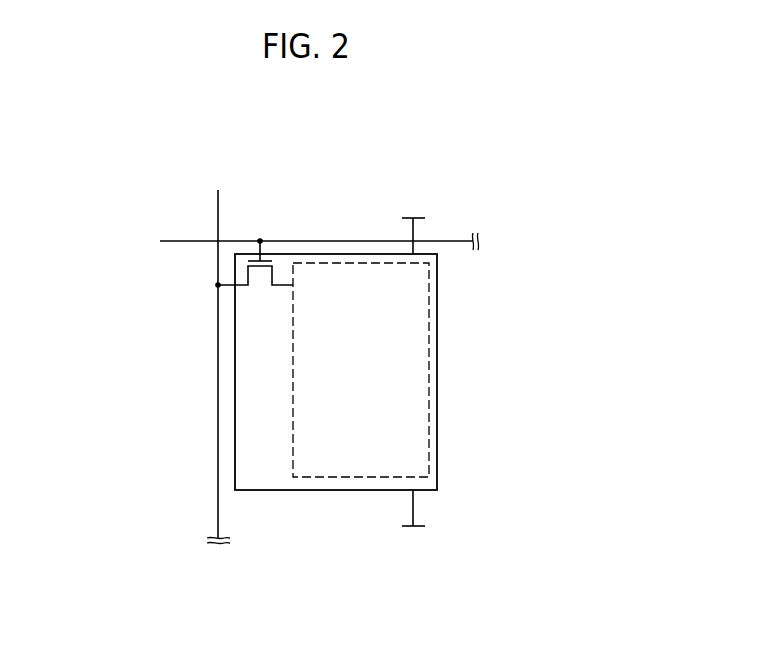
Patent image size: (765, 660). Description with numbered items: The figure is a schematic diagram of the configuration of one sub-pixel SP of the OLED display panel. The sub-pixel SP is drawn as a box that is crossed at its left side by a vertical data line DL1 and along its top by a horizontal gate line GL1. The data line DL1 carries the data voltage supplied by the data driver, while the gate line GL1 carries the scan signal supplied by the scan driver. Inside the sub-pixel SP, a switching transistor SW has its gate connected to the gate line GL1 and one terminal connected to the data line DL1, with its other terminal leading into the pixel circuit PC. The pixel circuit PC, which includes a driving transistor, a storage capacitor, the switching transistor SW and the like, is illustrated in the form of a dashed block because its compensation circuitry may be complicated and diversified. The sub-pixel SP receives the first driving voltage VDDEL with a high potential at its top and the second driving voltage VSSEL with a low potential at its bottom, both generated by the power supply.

The data line DL1 is at (216, 355).
The gate line GL1 is at (303, 241).
The switching transistor SW is at (254, 272).
The pixel circuit PC is at (373, 362).
The sub-pixel SP is at (437, 416).
The first driving voltage VDDEL is at (412, 225).
The second driving voltage VSSEL is at (414, 521).